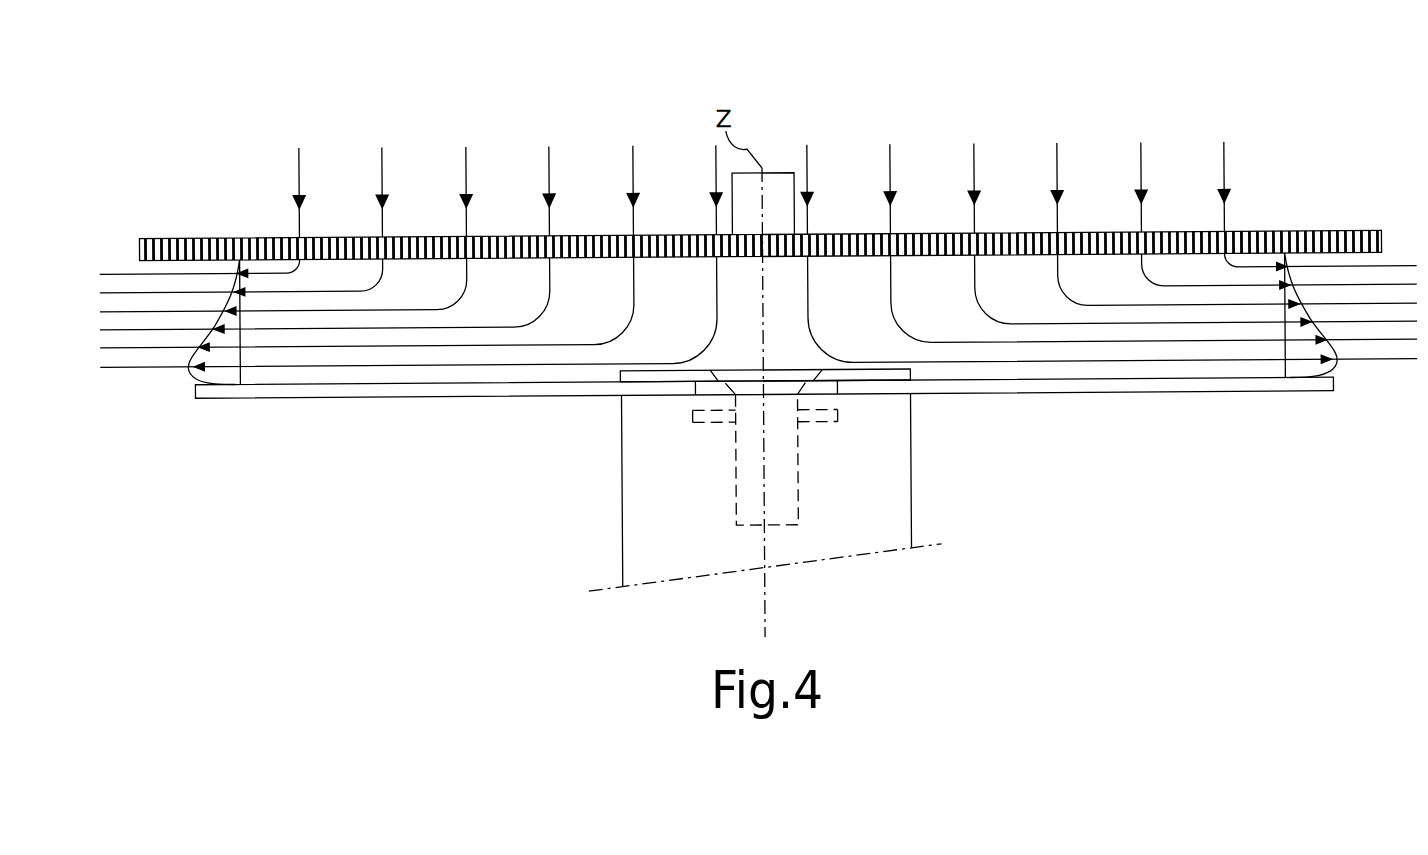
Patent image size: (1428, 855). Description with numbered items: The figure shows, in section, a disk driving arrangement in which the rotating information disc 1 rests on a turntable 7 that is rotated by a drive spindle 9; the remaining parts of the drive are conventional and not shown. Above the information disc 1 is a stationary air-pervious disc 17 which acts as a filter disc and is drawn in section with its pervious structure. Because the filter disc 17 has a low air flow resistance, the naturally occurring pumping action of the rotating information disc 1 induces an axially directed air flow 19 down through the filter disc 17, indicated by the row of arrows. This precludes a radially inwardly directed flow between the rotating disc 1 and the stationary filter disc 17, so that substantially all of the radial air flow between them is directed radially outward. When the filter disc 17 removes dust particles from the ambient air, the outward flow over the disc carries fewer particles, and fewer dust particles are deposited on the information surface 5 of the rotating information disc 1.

The axially directed air flow 19 is at (246, 96).
The stationary air-pervious disc 17 is at (1321, 235).
The information disc 1 is at (1333, 388).
The information surface 5 is at (1067, 383).
The turntable 7 is at (893, 457).
The drive spindle 9 is at (735, 453).